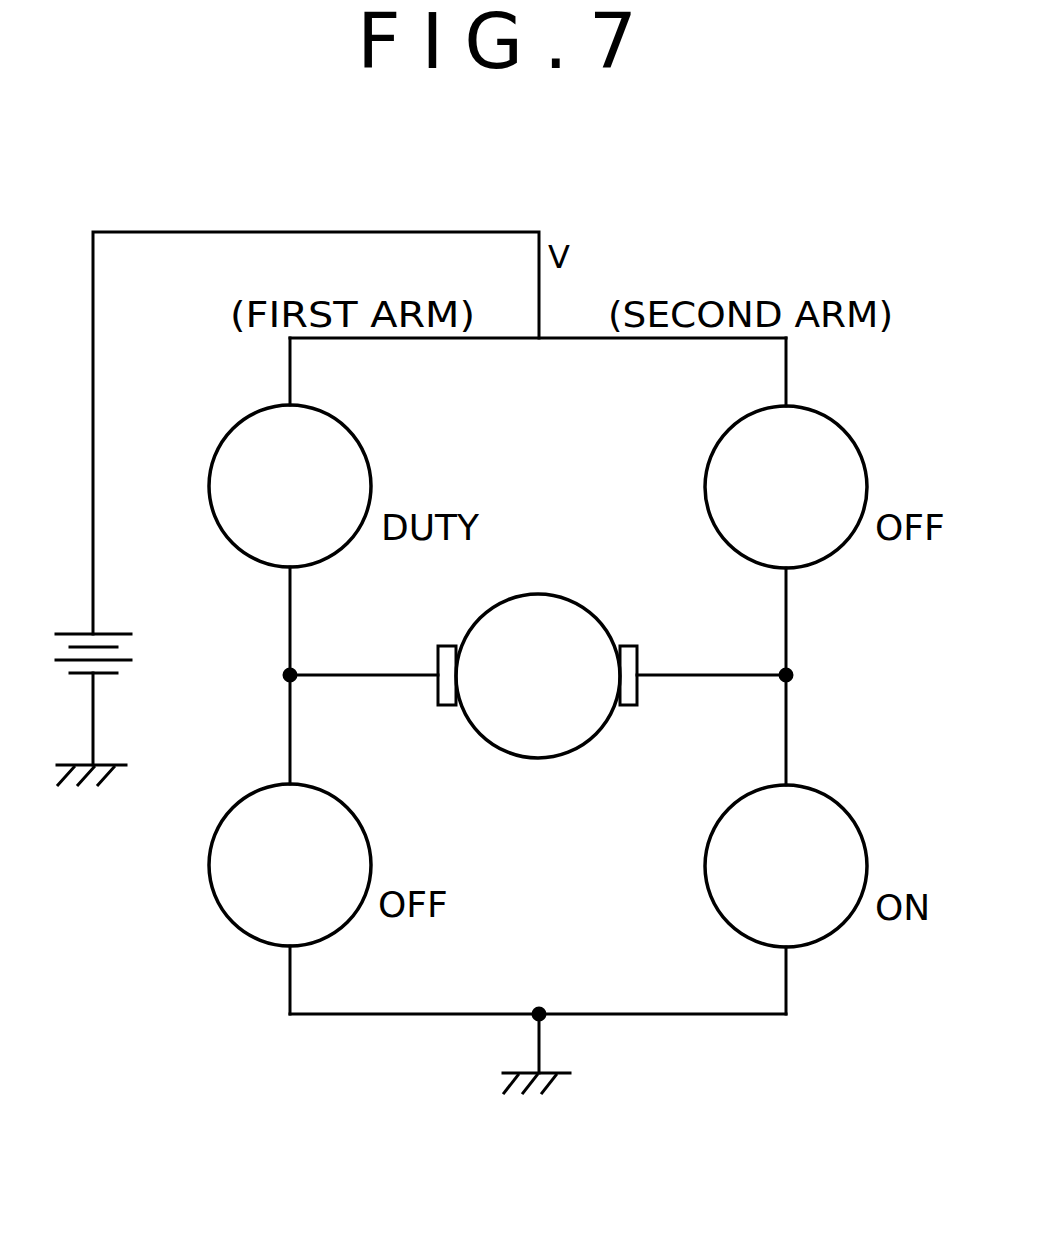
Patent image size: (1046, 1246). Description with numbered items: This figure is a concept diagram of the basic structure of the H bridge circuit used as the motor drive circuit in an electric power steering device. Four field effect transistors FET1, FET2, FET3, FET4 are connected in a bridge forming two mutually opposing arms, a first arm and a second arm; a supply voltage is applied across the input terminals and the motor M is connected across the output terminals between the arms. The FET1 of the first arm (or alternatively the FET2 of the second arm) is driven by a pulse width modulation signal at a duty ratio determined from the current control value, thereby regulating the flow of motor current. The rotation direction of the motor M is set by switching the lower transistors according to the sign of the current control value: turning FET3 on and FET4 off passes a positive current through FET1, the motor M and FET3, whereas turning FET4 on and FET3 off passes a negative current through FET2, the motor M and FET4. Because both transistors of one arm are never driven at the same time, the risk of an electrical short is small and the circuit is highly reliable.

The motor M is at (562, 596).
The first arm FET FET1 is at (290, 486).
The second arm FET FET2 is at (786, 487).
The second arm FET FET3 is at (786, 866).
The first arm FET FET4 is at (290, 865).